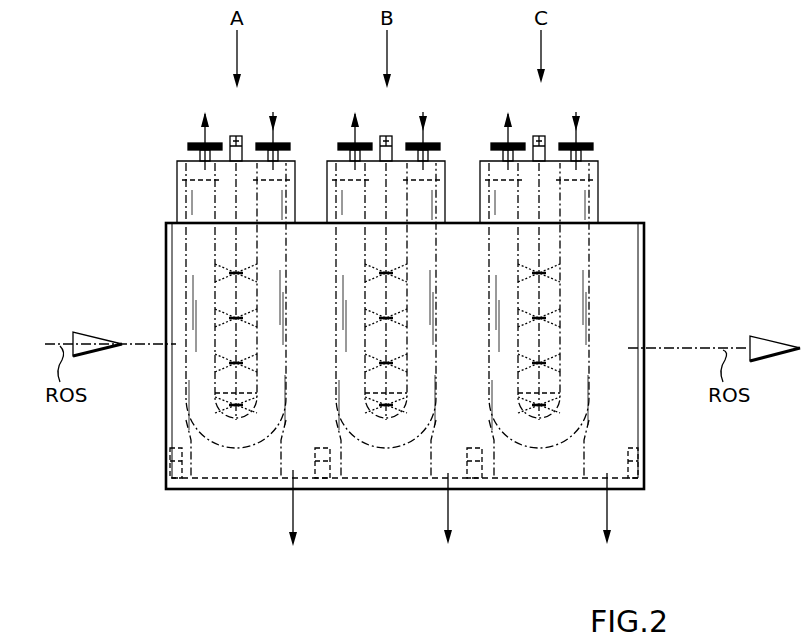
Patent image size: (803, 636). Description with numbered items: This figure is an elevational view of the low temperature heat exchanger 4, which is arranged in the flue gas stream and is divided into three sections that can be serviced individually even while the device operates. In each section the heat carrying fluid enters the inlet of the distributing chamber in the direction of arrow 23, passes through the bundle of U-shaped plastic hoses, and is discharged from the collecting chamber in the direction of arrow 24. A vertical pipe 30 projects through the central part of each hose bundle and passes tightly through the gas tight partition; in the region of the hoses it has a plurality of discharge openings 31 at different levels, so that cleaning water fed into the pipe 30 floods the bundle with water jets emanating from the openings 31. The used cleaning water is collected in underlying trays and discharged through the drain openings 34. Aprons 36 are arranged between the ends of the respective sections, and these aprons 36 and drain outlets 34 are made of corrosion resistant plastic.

The heat exchanger 4 is at (652, 219).
The arrow indicating heat carrying fluid inlet direction 23 is at (276, 132).
The arrow indicating heat carrying fluid discharge direction 24 is at (204, 140).
The vertical pipe 30 is at (235, 134).
The discharge openings 31 is at (538, 274).
The drain openings 34 is at (293, 512).
The aprons 36 is at (494, 457).